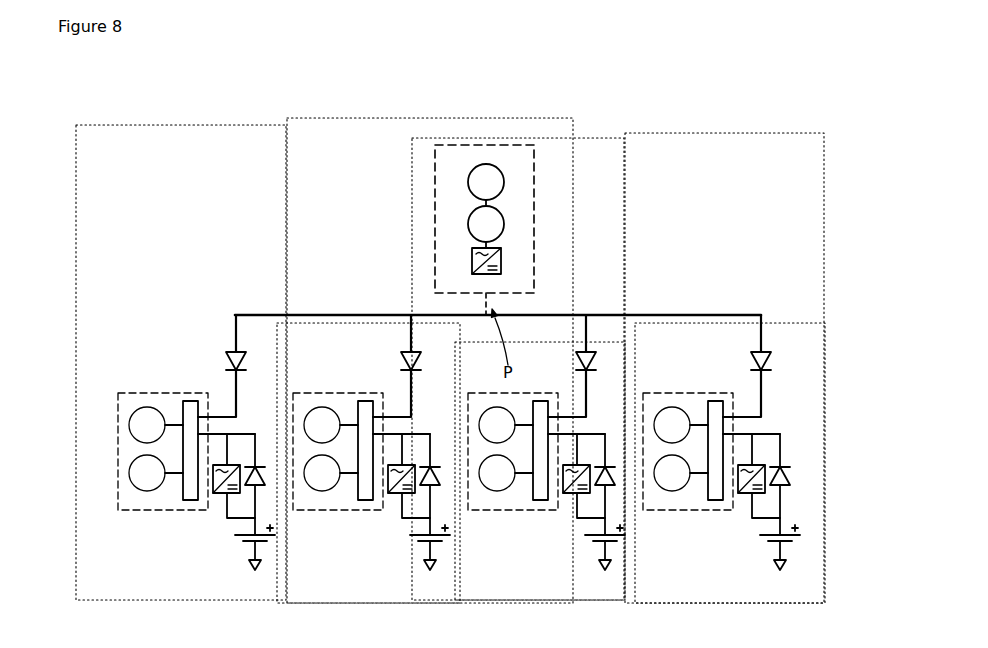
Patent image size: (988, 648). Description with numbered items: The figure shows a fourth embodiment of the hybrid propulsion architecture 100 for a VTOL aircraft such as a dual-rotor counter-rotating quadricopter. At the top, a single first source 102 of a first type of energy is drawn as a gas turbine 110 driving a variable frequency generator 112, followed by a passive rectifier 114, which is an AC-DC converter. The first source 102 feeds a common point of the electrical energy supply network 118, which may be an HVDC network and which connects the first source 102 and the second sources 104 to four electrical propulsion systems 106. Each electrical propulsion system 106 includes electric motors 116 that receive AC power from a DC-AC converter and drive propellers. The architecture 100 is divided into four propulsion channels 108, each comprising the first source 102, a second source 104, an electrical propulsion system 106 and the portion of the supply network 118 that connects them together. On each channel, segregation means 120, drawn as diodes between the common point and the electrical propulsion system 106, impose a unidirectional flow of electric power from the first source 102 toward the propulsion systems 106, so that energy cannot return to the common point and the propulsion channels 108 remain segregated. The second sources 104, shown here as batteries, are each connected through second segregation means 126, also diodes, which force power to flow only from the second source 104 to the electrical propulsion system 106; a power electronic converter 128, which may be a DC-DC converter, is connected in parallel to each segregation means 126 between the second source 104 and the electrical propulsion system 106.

The hybrid propulsion architecture 100 is at (728, 186).
The first source 102 is at (535, 212).
The second source 104 is at (546, 551).
The electrical propulsion system 106 is at (425, 431).
The propulsion channel 108 is at (78, 185).
The gas turbine 110 is at (505, 188).
The variable frequency generator 112 is at (505, 222).
The passive rectifier 114 is at (502, 262).
The electric motor 116 is at (143, 429).
The electrical energy supply network 118 is at (672, 313).
The segregation means 120 is at (525, 366).
The second segregation means 126 is at (520, 466).
The power electronic converter 128 is at (478, 515).